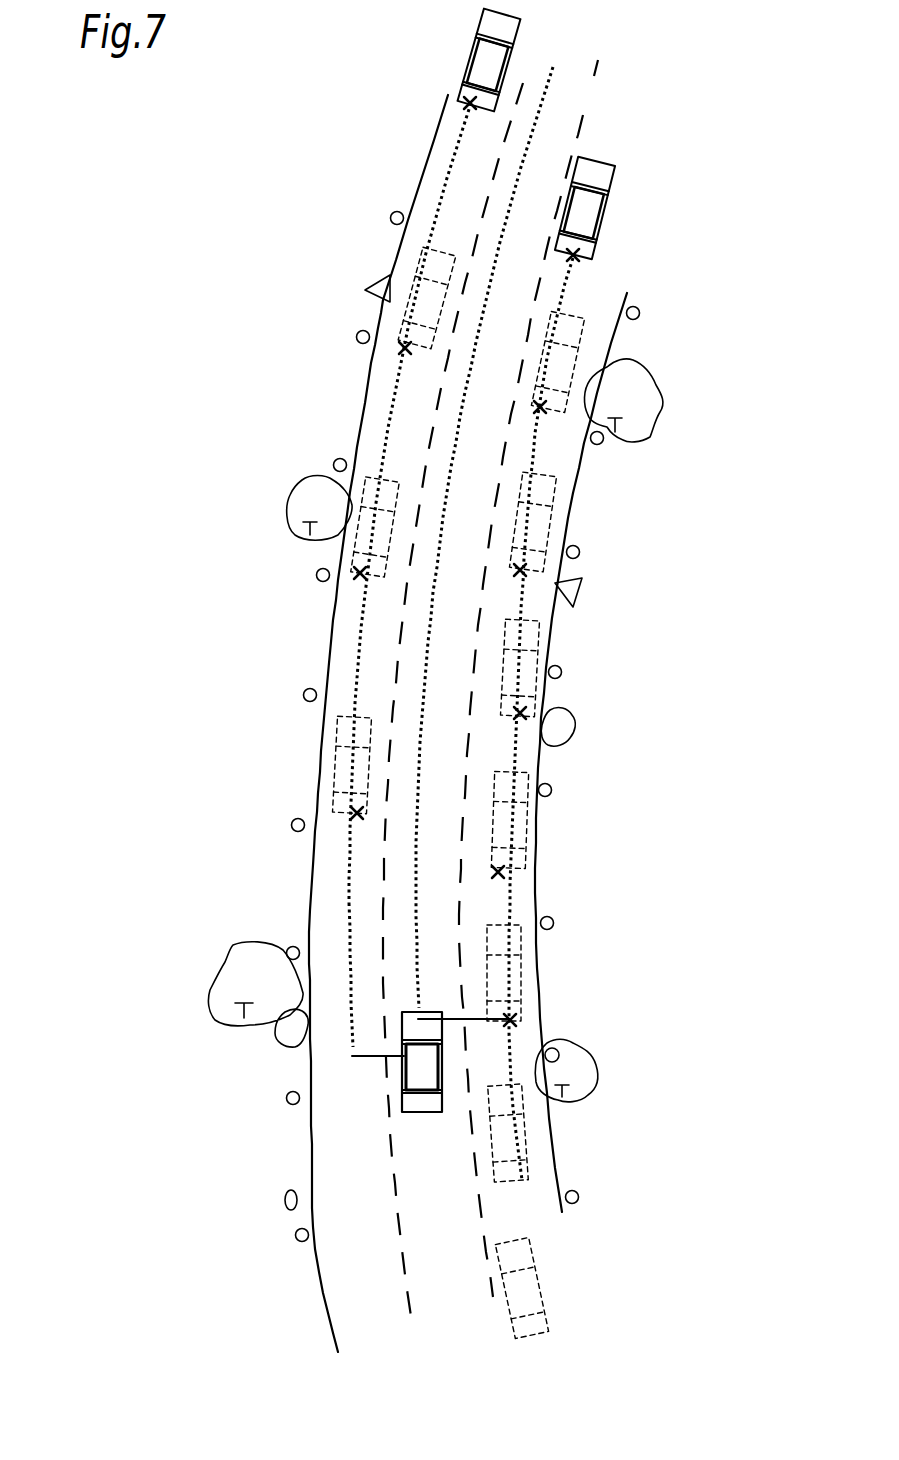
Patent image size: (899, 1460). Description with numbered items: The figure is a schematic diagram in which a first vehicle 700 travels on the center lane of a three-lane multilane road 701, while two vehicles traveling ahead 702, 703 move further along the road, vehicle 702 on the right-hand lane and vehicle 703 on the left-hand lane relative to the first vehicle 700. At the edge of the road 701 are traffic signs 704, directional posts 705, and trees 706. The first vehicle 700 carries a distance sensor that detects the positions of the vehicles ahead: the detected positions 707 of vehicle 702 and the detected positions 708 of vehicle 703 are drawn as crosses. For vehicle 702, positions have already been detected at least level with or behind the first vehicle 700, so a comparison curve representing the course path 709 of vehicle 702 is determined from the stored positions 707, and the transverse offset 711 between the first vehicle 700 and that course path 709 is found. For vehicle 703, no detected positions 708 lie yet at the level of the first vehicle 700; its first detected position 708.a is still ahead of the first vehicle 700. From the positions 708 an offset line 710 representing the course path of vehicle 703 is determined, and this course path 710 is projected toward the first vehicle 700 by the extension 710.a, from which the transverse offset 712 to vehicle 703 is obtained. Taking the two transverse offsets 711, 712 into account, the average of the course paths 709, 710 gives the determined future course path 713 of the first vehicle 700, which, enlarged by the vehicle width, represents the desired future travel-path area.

The first vehicle 700 is at (420, 1113).
The multilane road 701 is at (557, 1163).
The vehicle traveling ahead 702 is at (612, 208).
The vehicle traveling ahead 703 is at (470, 65).
The traffic signs 704 is at (578, 583).
The directional posts 705 is at (639, 309).
The trees 706 is at (657, 397).
The detected positions of vehicle traveling ahead 702 707 is at (500, 887).
The detected positions of vehicle traveling ahead 703 708 is at (405, 350).
The first detected position of vehicle 703 708.a is at (357, 813).
The course path of vehicle traveling ahead 702 709 is at (512, 825).
The offset line 710 is at (362, 632).
The projected course path 710.a is at (352, 902).
The transverse offset 711 is at (480, 1018).
The transverse offset 712 is at (354, 1057).
The determined future course path of first vehicle 713 is at (553, 72).